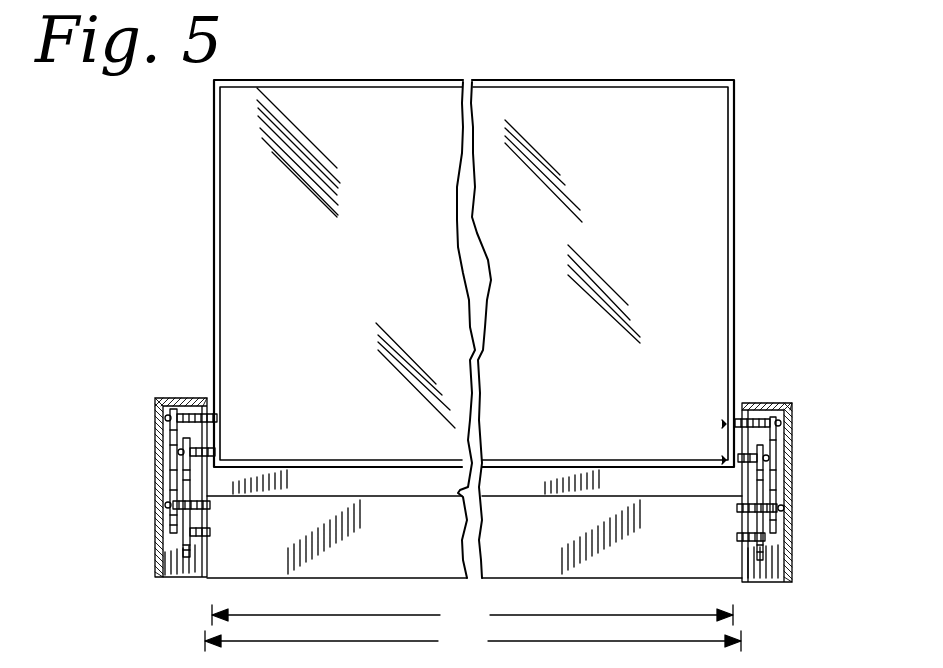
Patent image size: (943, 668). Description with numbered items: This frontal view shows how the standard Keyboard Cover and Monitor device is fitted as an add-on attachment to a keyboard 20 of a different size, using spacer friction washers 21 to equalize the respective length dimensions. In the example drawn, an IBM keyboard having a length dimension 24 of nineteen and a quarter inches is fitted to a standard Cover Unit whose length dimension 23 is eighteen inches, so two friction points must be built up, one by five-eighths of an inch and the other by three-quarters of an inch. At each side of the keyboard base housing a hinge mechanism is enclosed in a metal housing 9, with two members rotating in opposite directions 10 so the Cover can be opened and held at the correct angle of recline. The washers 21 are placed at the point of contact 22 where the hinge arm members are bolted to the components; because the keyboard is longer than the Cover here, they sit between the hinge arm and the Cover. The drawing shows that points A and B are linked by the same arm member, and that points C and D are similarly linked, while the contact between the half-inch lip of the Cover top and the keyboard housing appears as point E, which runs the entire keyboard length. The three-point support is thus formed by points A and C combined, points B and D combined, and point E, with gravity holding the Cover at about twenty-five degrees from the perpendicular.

The contact point A is at (474, 329).
The contact point C is at (680, 440).
The contact point E is at (300, 483).
The contact point B is at (778, 509).
The contact point D is at (765, 530).
The metal housing 9 is at (175, 398).
The two-member hinge mechanism rotating in opposite directions 10 is at (792, 423).
The keyboard 20 is at (404, 554).
The spacer friction washers 21 is at (200, 527).
The bolted point of contact 22 is at (727, 423).
The Cover Unit length dimension 23 is at (472, 616).
The keyboard length dimension 24 is at (473, 642).